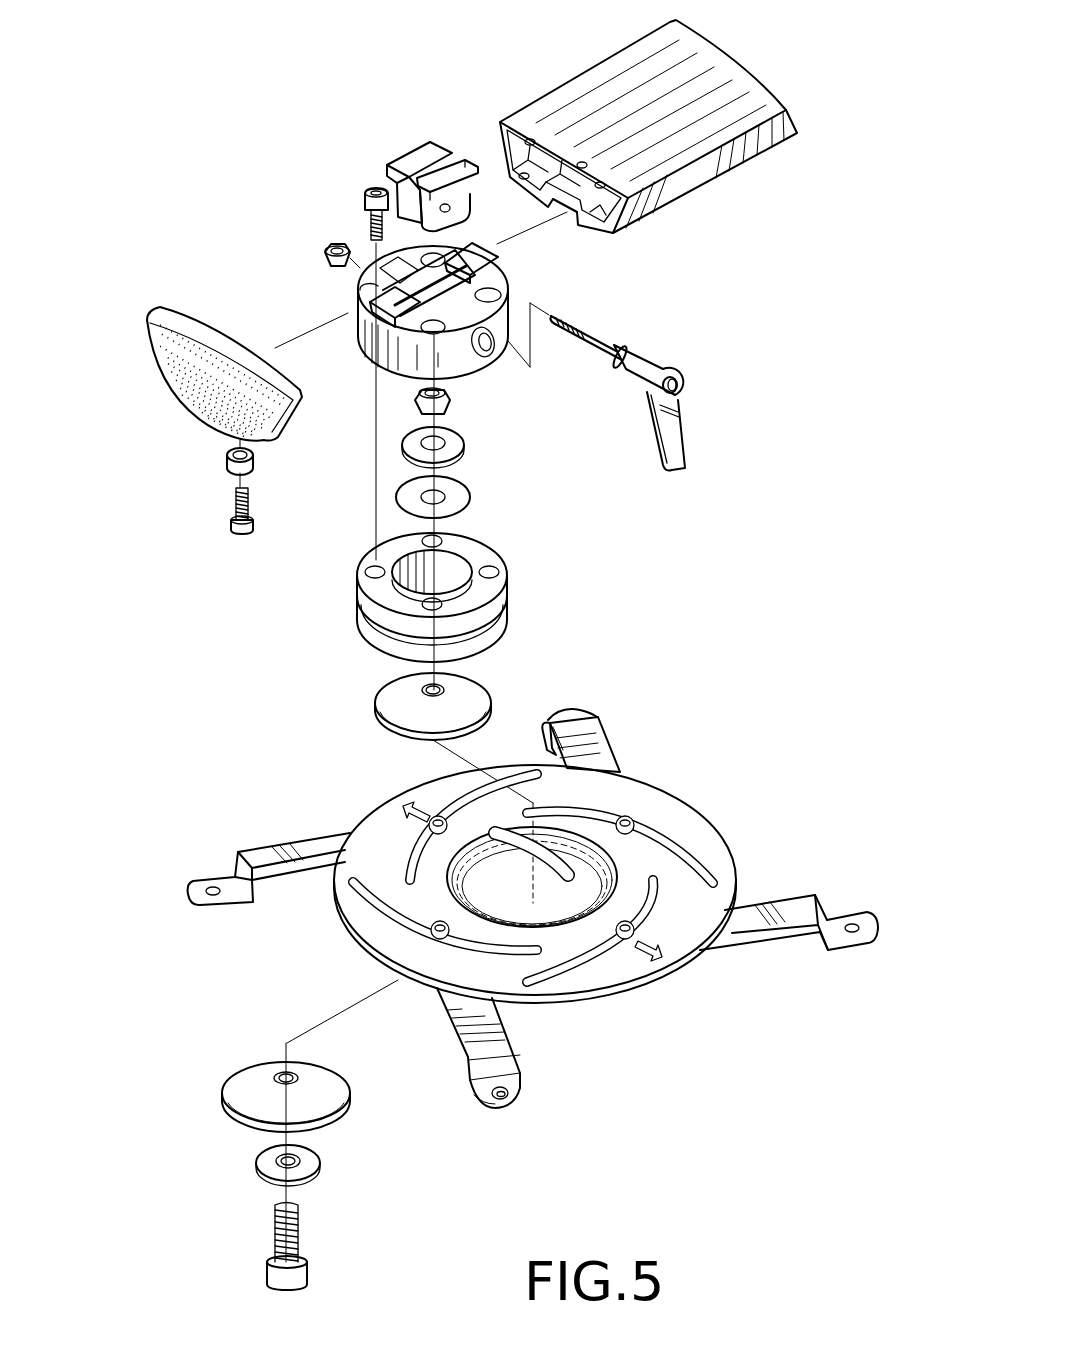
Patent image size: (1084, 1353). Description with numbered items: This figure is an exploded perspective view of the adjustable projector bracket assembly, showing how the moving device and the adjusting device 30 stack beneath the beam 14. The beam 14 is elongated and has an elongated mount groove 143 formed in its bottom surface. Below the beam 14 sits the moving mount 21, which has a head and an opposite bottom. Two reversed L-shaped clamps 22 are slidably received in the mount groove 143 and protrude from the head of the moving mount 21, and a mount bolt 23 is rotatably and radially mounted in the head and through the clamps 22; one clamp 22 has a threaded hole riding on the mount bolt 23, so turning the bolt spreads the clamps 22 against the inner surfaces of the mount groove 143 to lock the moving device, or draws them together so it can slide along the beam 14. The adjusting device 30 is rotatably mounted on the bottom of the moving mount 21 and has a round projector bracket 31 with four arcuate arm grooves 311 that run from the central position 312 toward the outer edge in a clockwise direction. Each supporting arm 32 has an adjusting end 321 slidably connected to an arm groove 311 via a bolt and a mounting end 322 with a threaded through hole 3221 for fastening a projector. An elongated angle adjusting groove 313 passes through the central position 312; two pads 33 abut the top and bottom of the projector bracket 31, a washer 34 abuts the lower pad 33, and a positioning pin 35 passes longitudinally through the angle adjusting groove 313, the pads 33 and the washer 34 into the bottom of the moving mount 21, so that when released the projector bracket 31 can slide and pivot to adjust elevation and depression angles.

The beam 14 is at (707, 173).
The mount groove 143 is at (568, 222).
The moving mount 21 is at (304, 293).
The clamps 22 is at (400, 161).
The mount bolt 23 is at (653, 362).
The adjusting device 30 is at (348, 795).
The projector bracket 31 is at (698, 833).
The arm grooves 311 is at (367, 895).
The central position 312 is at (473, 877).
The angle adjusting groove 313 is at (542, 842).
The supporting arms 32 is at (500, 1042).
The adjusting end 321 is at (625, 942).
The mounting end 322 is at (483, 1092).
The through hole 3221 is at (508, 1093).
The pads 33 is at (386, 706).
The washer 34 is at (305, 1172).
The positioning pin 35 is at (300, 1276).